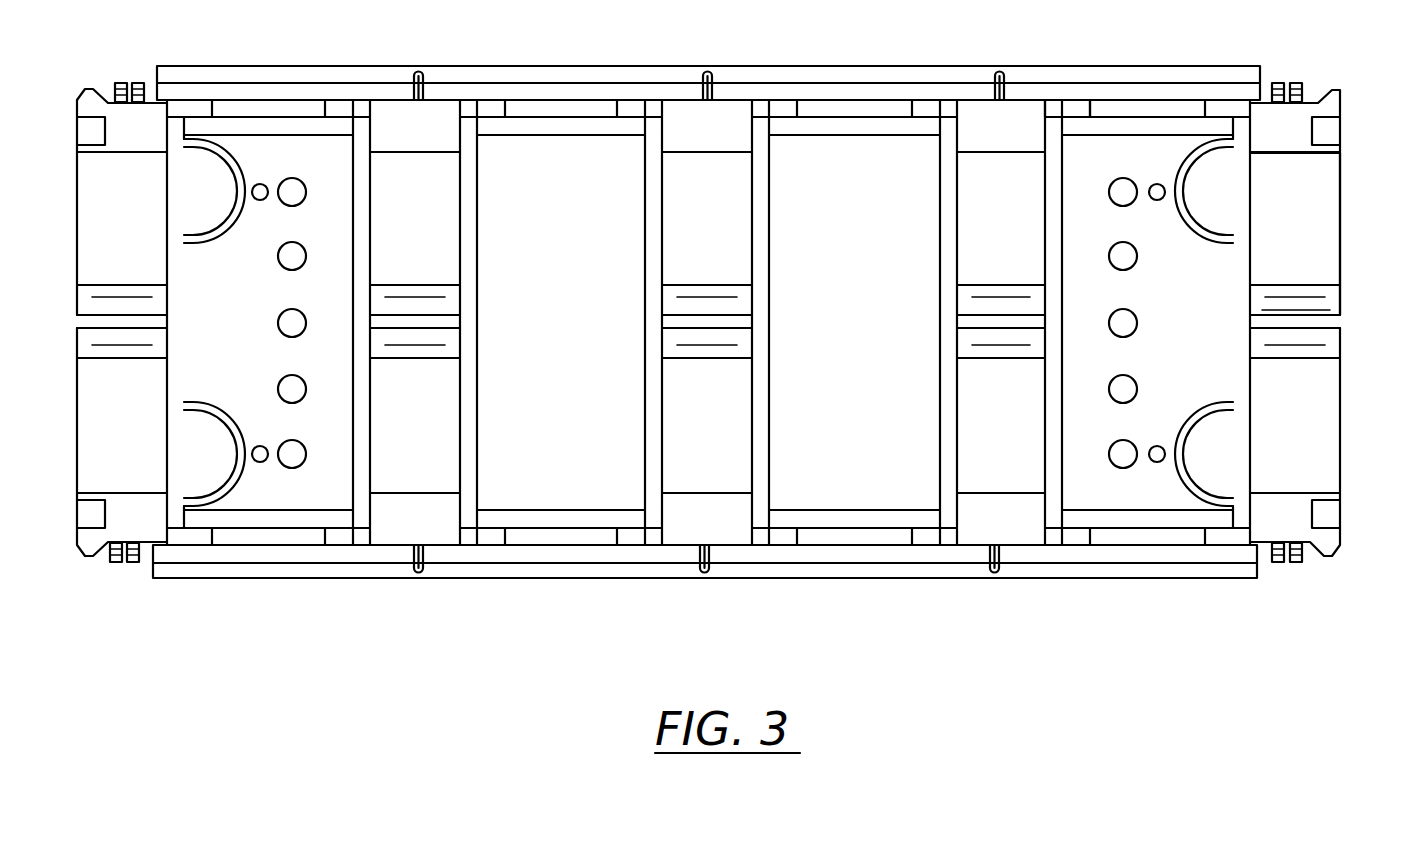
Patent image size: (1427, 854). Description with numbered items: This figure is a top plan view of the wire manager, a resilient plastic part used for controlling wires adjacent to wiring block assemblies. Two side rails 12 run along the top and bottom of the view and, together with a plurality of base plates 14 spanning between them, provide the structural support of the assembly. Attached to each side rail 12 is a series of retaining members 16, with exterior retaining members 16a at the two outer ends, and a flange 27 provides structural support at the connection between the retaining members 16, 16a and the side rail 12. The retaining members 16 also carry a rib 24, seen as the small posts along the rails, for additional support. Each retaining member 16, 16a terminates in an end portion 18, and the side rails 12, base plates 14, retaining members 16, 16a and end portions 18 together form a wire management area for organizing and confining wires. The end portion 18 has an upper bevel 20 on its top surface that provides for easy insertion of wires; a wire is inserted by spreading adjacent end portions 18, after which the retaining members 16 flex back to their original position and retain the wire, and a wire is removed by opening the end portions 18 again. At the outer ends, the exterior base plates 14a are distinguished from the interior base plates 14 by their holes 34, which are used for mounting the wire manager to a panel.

The side rail 12 is at (775, 42).
The base plate 14 is at (830, 503).
The exterior base plate 14a is at (1155, 500).
The retaining member 16 is at (1024, 540).
The exterior retaining member 16a is at (1313, 105).
The end portion 18 is at (1347, 155).
The upper bevel 20 is at (1335, 316).
The rib 24 is at (996, 93).
The flange 27 is at (1072, 104).
The holes 34 is at (291, 250).